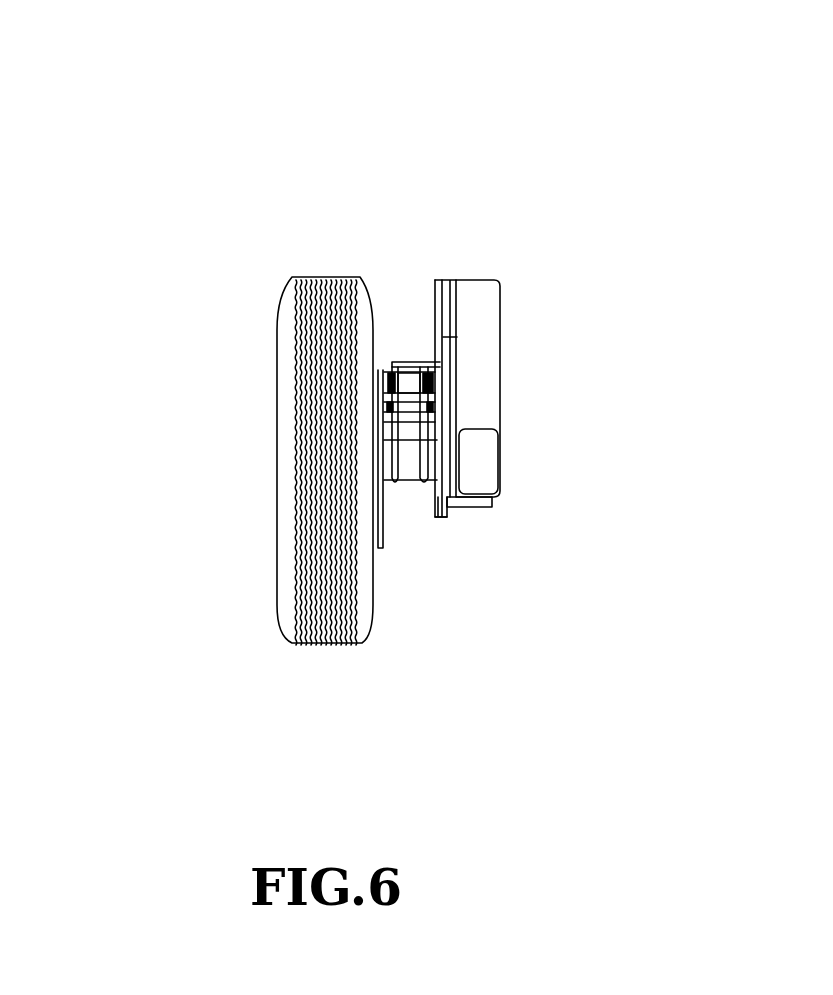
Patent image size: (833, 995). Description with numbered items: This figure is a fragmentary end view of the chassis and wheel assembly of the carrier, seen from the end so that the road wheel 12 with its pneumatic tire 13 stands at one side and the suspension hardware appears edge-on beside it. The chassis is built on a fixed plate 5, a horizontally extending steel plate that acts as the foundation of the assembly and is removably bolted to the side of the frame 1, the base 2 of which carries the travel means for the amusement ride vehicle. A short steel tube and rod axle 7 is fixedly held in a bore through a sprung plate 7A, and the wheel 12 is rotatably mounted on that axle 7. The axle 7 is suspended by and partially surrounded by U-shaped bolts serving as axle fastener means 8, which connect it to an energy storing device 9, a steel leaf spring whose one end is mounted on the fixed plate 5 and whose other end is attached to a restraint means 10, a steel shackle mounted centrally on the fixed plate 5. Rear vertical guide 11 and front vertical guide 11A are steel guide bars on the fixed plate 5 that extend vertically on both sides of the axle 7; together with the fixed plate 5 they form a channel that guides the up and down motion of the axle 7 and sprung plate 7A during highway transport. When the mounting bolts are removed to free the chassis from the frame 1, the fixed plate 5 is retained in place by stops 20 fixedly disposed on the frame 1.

The frame 1 is at (483, 313).
The base of frame 2 is at (483, 458).
The fixed plate 5 is at (452, 281).
The axle 7 is at (407, 473).
The sprung plate 7A is at (443, 518).
The axle fastener means 8 is at (392, 487).
The energy storing device 9 is at (403, 362).
The restraint means 10 is at (417, 370).
The vertical guide, rear 11 is at (441, 330).
The vertical guide, front 11A is at (432, 332).
The wheel 12 is at (288, 595).
The tire 13 is at (327, 647).
The stops restraining fixed plate 20 is at (449, 500).